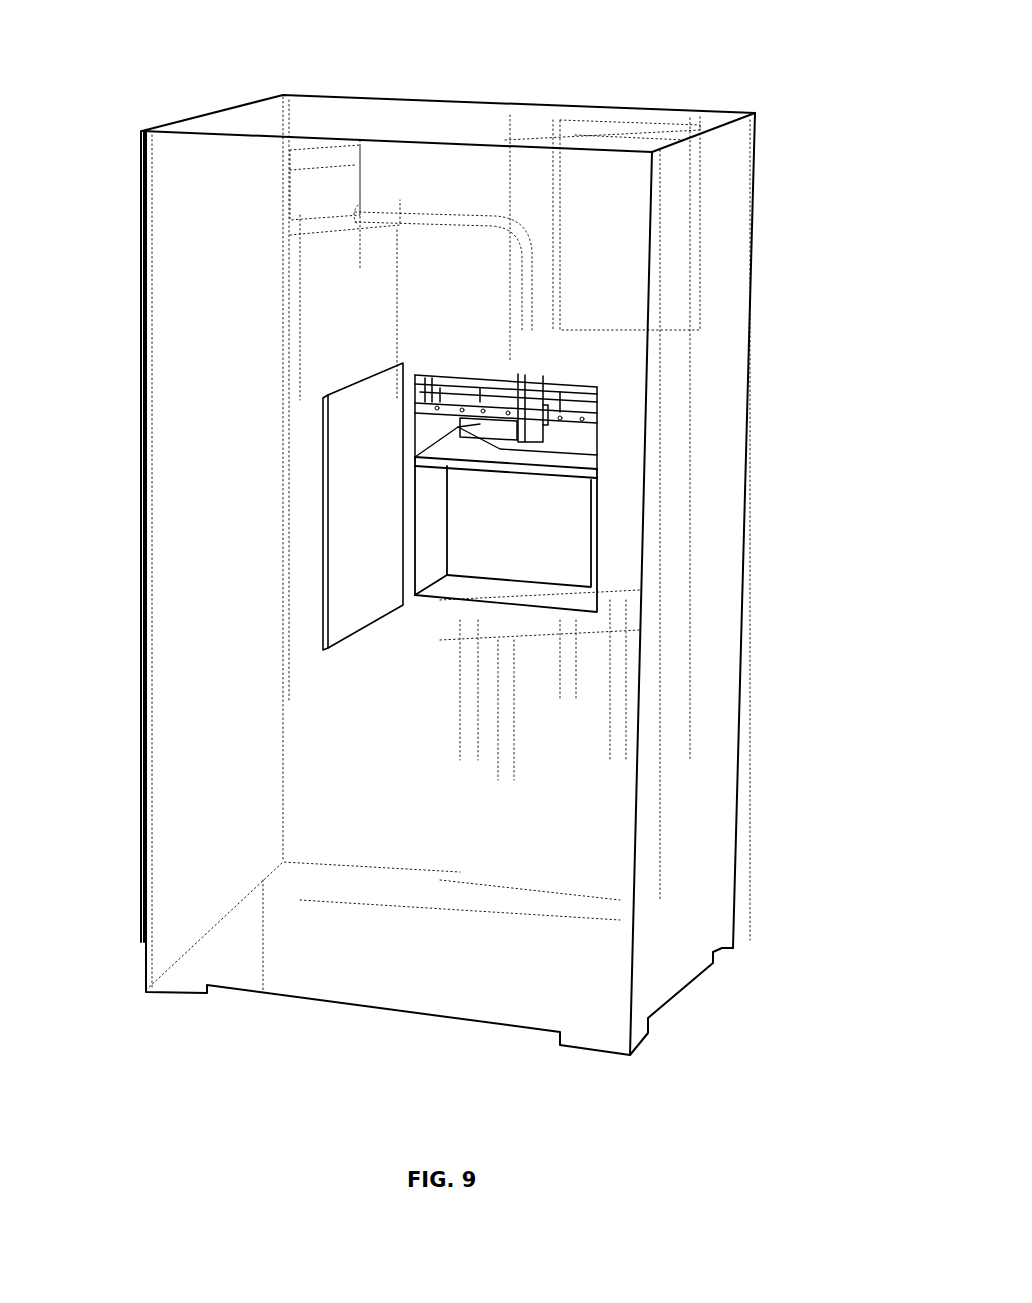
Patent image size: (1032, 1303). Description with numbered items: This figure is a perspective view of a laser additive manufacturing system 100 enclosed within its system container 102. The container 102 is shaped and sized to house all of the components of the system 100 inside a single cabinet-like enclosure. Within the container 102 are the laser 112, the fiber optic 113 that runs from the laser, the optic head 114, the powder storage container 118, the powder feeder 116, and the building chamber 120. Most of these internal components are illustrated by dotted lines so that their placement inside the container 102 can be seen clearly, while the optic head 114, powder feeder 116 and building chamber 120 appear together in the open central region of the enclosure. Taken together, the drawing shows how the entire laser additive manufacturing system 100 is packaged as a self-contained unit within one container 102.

The laser additive manufacturing system 100 is at (832, 70).
The container 102 is at (165, 308).
The laser 112 is at (327, 168).
The fiber optic 113 is at (475, 217).
The powder storage container 118 is at (602, 185).
The powder feeder 116 is at (605, 373).
The optic head 114 is at (545, 426).
The building chamber 120 is at (610, 520).